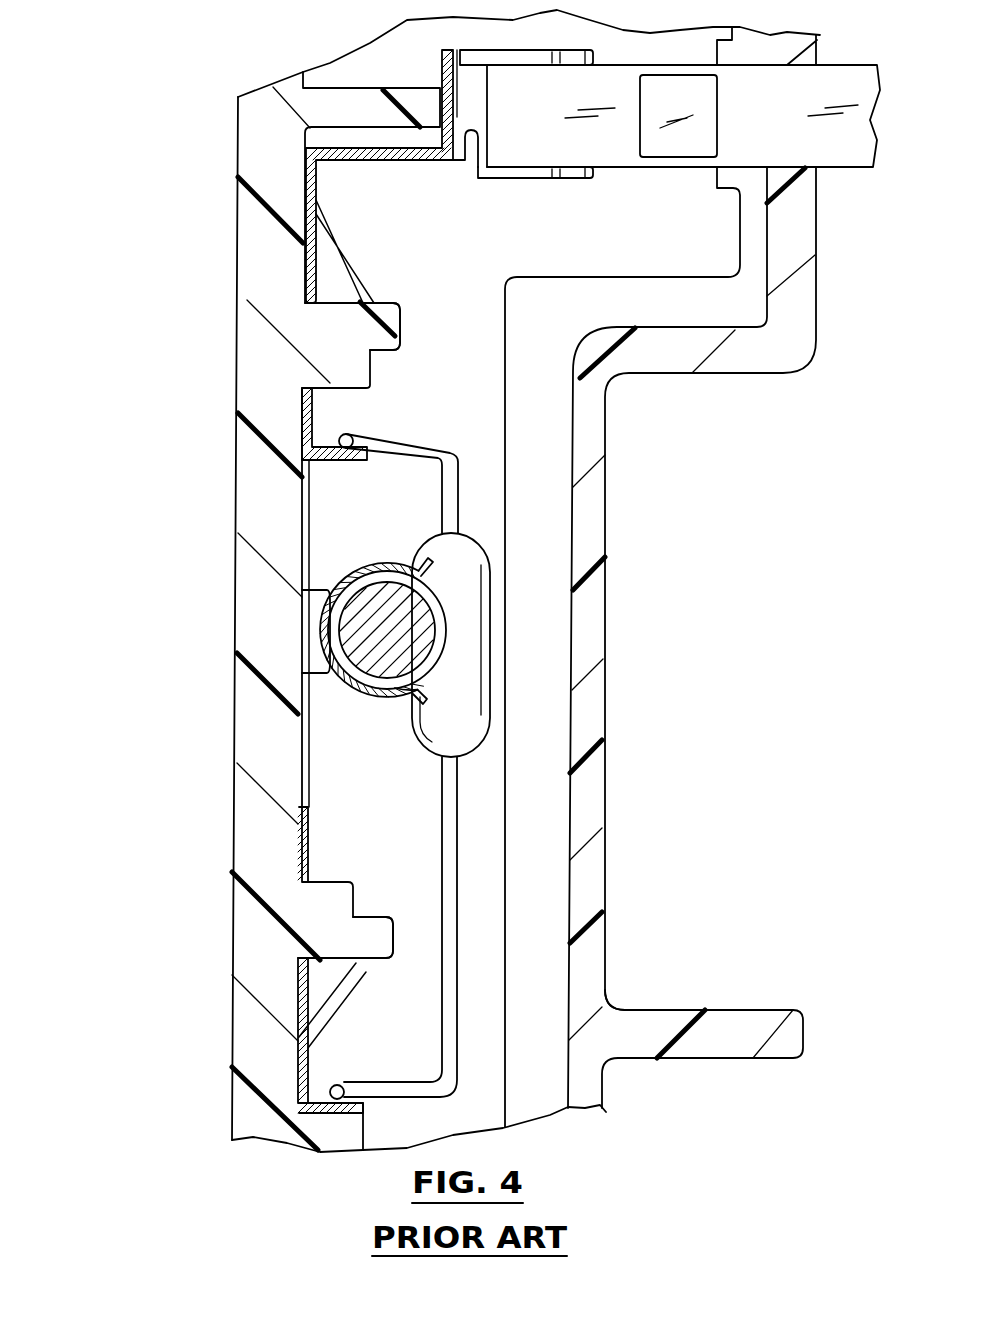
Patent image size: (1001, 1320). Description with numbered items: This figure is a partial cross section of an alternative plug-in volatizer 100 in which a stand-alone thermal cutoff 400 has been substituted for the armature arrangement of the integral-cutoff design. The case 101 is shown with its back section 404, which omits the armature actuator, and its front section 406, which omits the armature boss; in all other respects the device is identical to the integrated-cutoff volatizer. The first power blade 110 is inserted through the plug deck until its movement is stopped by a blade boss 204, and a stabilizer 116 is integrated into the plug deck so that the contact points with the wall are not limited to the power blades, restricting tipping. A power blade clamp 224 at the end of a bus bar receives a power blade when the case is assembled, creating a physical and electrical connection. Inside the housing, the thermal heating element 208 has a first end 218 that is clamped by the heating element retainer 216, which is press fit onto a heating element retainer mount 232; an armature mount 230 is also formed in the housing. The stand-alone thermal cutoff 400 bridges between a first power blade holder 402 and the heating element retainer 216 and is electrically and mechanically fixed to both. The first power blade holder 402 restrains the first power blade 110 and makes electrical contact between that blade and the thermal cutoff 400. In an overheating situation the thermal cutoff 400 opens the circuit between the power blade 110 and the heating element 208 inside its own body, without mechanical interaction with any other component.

The volatizer 100 is at (138, 897).
The case 101 is at (768, 698).
The first power blade 110 is at (813, 152).
The stabilizer 116 is at (758, 1020).
The blade boss 204 is at (655, 145).
The thermal heating element 208 is at (380, 630).
The heating element retainer 216 is at (358, 687).
The first end 218 is at (405, 683).
The power blade clamp 224 is at (517, 173).
The armature mount 230 is at (353, 330).
The heating element retainer mount 232 is at (358, 937).
The stand-alone thermal cutoff 400 is at (465, 620).
The first power blade holder 402 is at (303, 447).
The back section 404 is at (780, 340).
The front section 406 is at (252, 357).